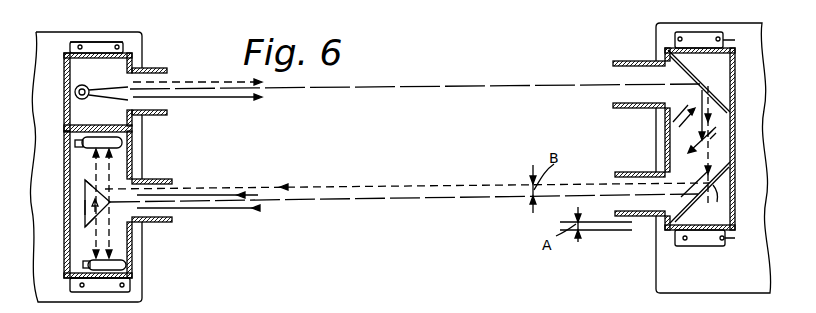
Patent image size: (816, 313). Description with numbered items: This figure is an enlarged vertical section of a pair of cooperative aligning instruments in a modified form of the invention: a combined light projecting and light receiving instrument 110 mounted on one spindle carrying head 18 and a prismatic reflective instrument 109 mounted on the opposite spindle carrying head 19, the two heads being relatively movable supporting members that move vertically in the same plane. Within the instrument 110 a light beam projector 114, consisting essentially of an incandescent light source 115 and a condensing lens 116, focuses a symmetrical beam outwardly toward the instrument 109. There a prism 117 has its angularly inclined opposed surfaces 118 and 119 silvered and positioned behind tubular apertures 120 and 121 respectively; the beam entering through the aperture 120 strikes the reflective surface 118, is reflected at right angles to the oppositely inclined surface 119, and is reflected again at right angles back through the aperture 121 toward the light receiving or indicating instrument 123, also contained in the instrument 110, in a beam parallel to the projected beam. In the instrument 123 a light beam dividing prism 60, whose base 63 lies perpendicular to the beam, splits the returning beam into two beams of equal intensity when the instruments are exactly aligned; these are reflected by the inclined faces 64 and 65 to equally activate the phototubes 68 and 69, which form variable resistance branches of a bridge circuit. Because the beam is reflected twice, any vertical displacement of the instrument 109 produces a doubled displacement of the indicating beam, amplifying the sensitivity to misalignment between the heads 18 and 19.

The combined light projecting and light receiving instrument 110 is at (107, 28).
The prismatic reflective instrument 109 is at (697, 43).
The spindle carrying head 18 is at (143, 279).
The spindle carrying head 19 is at (680, 272).
The light beam projector 114 is at (74, 107).
The incandescent light source 115 is at (84, 86).
The condensing lens 116 is at (128, 100).
The prism 117 is at (716, 131).
The angularly inclined reflective surface 118 is at (700, 76).
The angularly inclined reflective surface 119 is at (686, 212).
The tubular aperture 120 is at (612, 62).
The tubular aperture 121 is at (632, 221).
The light receiving or indicating instrument 123 is at (80, 238).
The light beam dividing prism 60 is at (86, 191).
The base 63 is at (86, 208).
The inclined face 64 is at (94, 226).
The inclined face 65 is at (90, 179).
The phototube 68 is at (96, 268).
The phototube 69 is at (82, 147).